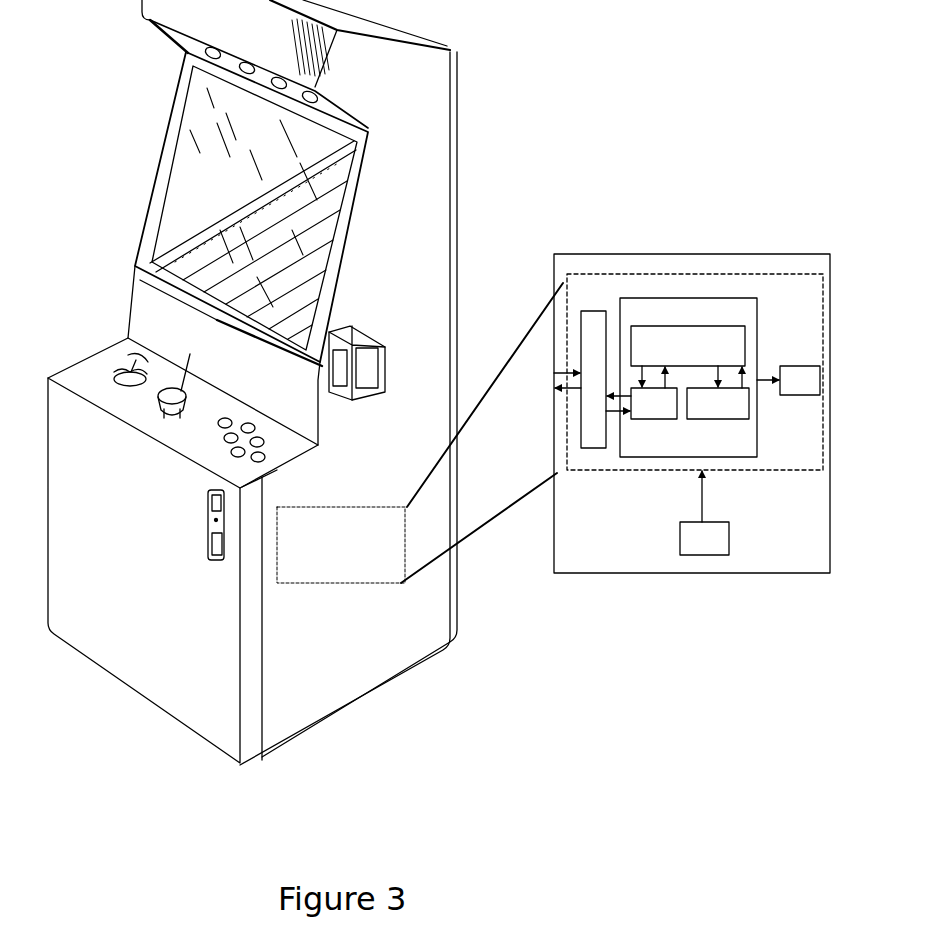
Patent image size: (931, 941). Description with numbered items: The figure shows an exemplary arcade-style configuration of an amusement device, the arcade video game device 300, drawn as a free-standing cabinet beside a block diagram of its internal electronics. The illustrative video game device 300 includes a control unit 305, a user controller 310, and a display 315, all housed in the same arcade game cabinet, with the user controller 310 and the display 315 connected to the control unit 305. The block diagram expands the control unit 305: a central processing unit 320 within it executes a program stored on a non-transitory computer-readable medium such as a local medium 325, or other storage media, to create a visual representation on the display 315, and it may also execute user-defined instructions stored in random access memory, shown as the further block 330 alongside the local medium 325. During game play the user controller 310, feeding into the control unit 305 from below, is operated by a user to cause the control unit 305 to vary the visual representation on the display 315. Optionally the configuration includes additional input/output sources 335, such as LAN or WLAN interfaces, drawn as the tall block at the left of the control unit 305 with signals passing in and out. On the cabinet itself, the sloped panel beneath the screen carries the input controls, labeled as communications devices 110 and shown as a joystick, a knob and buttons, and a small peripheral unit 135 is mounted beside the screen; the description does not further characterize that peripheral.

The arcade video game device 300 is at (440, 261).
The control unit 305 is at (768, 310).
The user controller 310 is at (704, 513).
The display 315 is at (180, 178).
The central processing unit 320 is at (688, 357).
The local medium 325 is at (718, 403).
The storage 330 is at (641, 403).
The additional input/output sources 335 is at (596, 390).
The communications device 110 is at (247, 422).
The card reader 135 is at (334, 399).